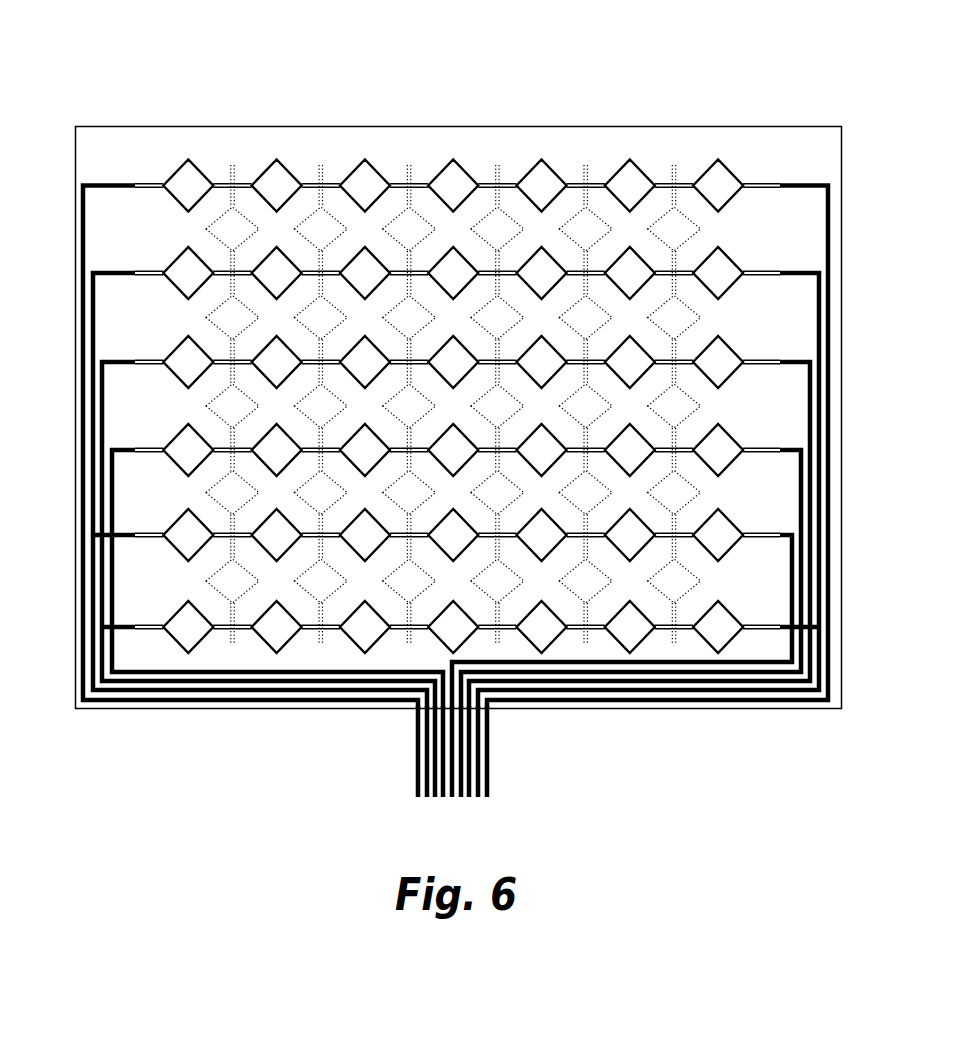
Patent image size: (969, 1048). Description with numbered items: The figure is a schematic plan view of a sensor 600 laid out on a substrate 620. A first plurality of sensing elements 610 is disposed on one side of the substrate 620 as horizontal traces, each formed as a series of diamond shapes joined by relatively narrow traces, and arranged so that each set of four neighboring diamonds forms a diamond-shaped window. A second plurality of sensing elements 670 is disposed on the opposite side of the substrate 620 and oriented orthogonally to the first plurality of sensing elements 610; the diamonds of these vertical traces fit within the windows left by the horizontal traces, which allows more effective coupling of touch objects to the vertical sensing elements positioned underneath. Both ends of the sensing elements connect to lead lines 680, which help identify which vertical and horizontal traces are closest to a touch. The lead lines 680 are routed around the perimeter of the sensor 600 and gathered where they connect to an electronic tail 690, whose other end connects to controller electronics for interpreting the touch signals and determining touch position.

The sensor 600 is at (568, 69).
The first plurality of sensing elements 610 is at (188, 183).
The substrate 620 is at (787, 145).
The second plurality of sensing elements 670 is at (490, 218).
The lead lines 680 is at (133, 703).
The electronic tail 690 is at (411, 805).